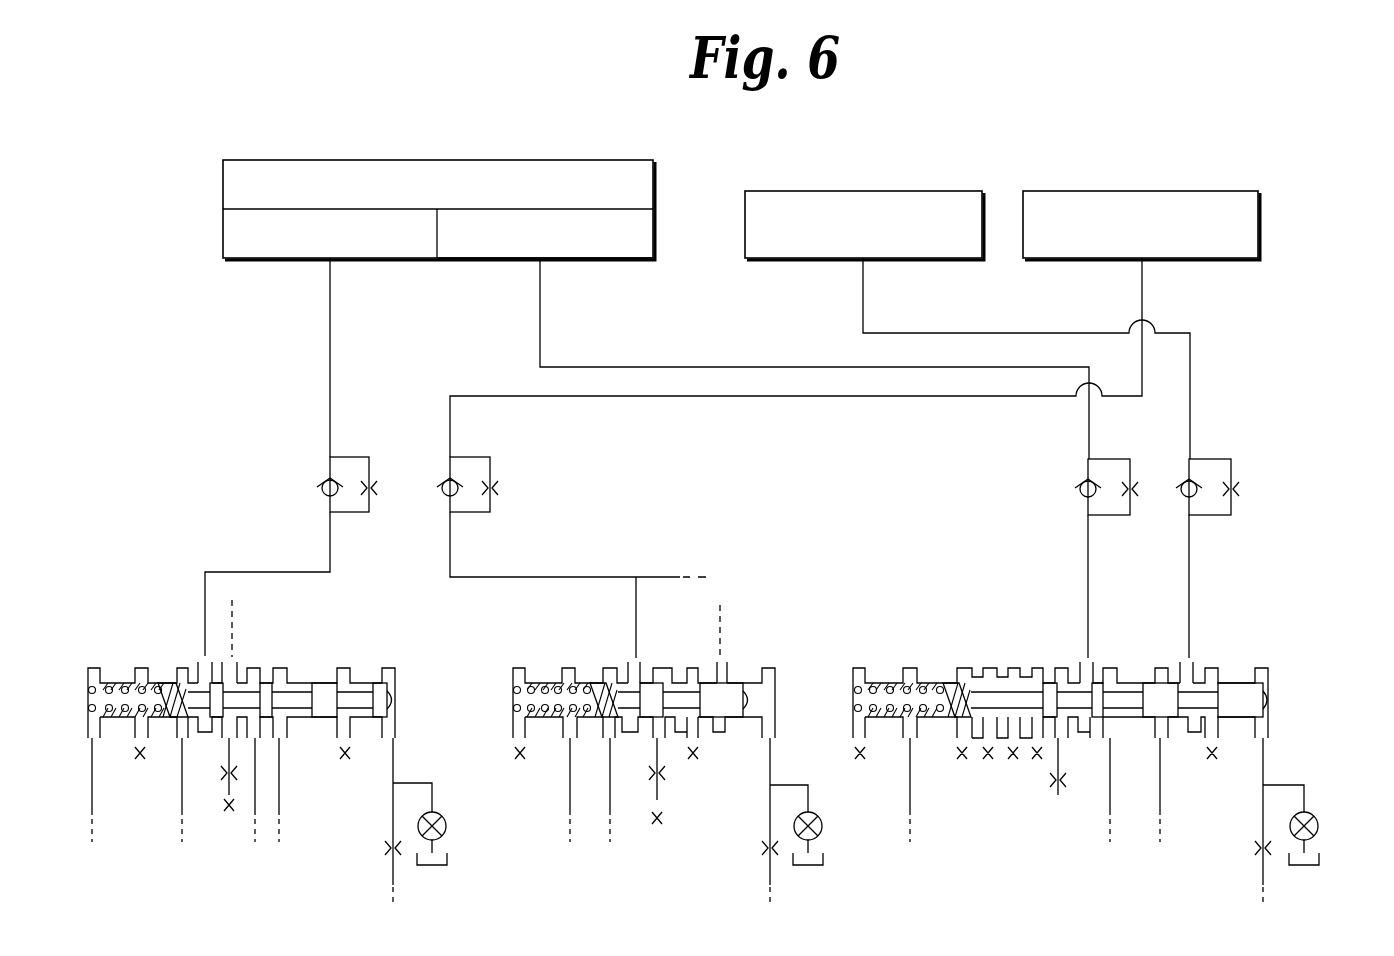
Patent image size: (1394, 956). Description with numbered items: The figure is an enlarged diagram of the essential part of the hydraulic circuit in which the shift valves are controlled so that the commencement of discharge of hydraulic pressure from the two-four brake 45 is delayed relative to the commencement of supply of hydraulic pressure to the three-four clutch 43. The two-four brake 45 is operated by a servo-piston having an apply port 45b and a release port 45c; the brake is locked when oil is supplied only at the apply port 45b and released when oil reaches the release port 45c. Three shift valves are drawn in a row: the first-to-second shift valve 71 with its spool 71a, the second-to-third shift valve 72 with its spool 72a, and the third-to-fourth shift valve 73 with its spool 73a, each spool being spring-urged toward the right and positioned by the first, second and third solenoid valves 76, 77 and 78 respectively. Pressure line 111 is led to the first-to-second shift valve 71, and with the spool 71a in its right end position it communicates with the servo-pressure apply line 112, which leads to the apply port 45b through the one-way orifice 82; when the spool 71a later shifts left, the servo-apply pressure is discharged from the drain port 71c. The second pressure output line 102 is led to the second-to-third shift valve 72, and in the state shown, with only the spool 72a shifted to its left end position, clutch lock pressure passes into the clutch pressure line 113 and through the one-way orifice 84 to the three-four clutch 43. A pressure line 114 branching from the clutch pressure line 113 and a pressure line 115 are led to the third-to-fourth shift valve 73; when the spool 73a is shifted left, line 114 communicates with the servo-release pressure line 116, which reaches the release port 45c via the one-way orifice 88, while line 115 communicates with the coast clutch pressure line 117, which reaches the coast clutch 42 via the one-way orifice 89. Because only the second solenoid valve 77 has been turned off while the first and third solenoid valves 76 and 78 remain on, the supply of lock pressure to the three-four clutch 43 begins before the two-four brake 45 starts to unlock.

The 2–4 brake 45 is at (223, 187).
The apply port 45b is at (272, 260).
The release port 45c is at (596, 260).
The coast clutch 42 is at (962, 191).
The 3–4 clutch 43 is at (1230, 191).
The servo-pressure apply line 112 is at (330, 413).
The one-way orifice 82 is at (370, 462).
The one-way orifice 84 is at (490, 462).
The one-way orifice 88 is at (1130, 460).
The one-way orifice 89 is at (1231, 460).
The 3–4 clutch pressure line 113 is at (568, 577).
The servo-release pressure line 116 is at (1088, 615).
The coast clutch pressure line 117 is at (1190, 594).
The 1–2 shift valve 71 is at (178, 660).
The spool of 1–2 shift valve 71a is at (256, 645).
The drain port 71c is at (228, 758).
The pressure line 111 is at (182, 805).
The first solenoid valve 76 is at (447, 825).
The 2–3 shift valve 72 is at (553, 660).
The spool of 2–3 shift valve 72a is at (737, 684).
The second pressure output line 102 is at (610, 818).
The second solenoid valve 77 is at (823, 825).
The 3–4 shift valve 73 is at (948, 662).
The spool of 3–4 shift valve 73a is at (1236, 684).
The pressure line 114 is at (1110, 810).
The pressure line 115 is at (1160, 810).
The third solenoid valve 78 is at (1319, 825).